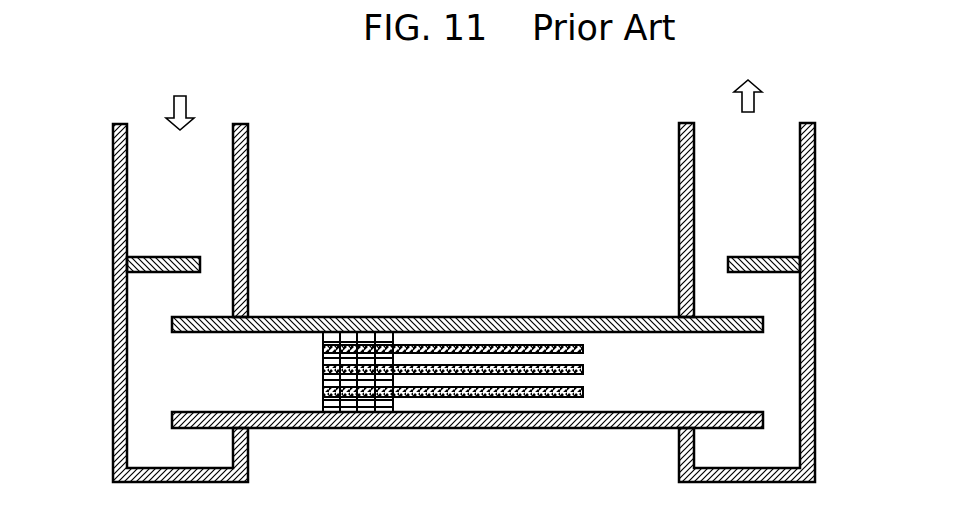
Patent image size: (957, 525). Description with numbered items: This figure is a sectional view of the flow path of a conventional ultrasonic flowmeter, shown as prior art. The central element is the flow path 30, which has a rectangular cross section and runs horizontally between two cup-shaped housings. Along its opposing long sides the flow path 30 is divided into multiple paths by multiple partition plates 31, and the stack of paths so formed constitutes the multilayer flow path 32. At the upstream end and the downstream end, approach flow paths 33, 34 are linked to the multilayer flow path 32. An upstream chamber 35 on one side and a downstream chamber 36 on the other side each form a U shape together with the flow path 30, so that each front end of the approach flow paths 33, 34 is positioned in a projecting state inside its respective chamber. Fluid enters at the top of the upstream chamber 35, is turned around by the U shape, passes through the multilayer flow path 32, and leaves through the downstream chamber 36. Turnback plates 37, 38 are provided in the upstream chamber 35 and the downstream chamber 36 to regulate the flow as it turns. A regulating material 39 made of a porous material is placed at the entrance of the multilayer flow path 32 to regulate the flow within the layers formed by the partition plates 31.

The flow path 30 is at (323, 317).
The partition plates 31 is at (535, 397).
The multilayer flow path 32 is at (473, 402).
The upstream approach flow path 33 is at (258, 368).
The downstream approach flow path 34 is at (713, 380).
The upstream chamber 35 is at (145, 380).
The downstream chamber 36 is at (782, 380).
The turnback plate 37 is at (152, 255).
The turnback plate 38 is at (757, 255).
The regulating material 39 is at (382, 343).